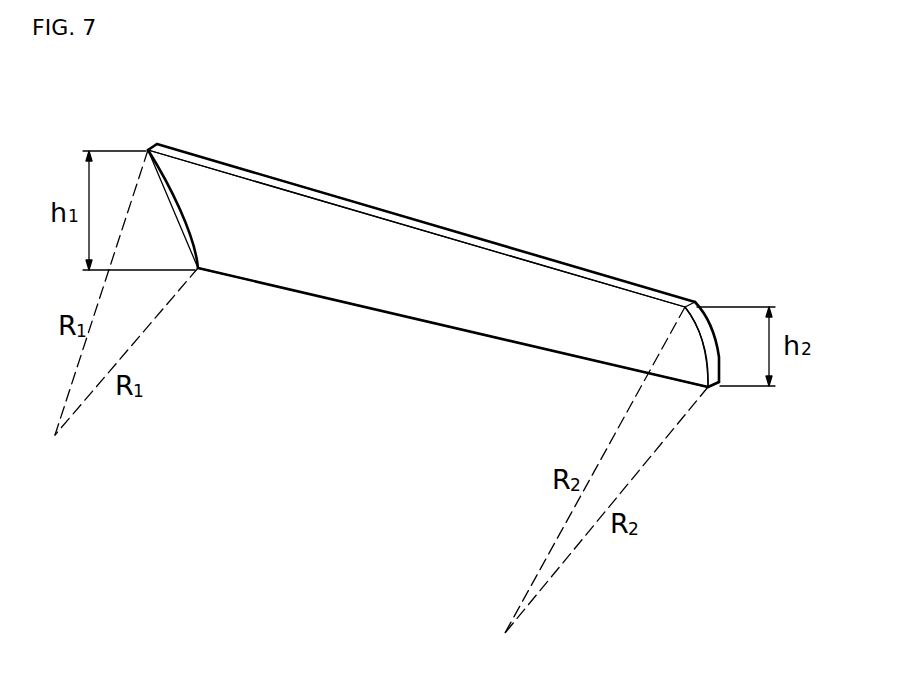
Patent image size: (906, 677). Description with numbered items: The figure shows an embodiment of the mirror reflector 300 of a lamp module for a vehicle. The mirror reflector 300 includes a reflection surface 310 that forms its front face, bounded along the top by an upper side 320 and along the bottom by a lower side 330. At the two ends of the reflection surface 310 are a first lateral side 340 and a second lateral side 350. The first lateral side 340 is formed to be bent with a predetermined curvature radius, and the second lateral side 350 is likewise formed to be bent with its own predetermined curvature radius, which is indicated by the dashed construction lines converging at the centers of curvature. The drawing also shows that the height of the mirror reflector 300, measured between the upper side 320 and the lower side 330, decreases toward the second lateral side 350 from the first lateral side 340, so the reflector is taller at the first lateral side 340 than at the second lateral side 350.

The mirror reflector 300 is at (474, 274).
The reflection surface 310 is at (568, 298).
The upper side 320 is at (355, 210).
The lower side 330 is at (453, 330).
The first lateral side 340 is at (185, 225).
The second lateral side 350 is at (703, 348).